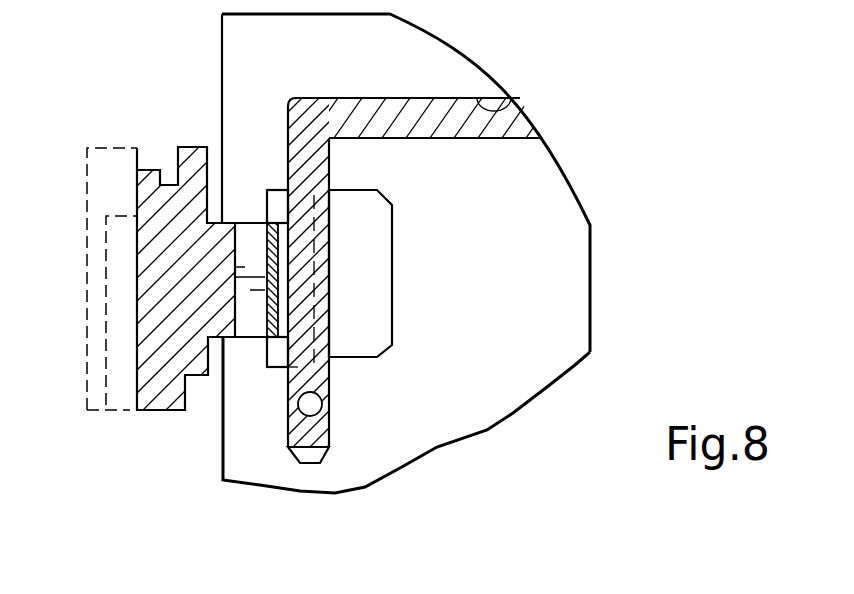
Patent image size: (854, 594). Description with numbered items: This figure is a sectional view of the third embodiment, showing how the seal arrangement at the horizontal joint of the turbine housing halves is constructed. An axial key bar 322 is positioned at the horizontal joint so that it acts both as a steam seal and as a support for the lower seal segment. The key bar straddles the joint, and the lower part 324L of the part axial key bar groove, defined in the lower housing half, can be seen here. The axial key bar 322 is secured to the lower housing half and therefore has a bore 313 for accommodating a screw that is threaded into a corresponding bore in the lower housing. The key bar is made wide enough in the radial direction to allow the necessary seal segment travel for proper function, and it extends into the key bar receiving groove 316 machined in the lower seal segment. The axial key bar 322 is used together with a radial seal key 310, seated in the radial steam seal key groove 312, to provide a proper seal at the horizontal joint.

The radial seal key 310 is at (523, 125).
The radial steam seal key groove 312 is at (522, 98).
The lower part of axial key bar groove 324L is at (290, 127).
The bore 313 is at (322, 405).
The key bar receiving groove 316 is at (285, 338).
The axial key bar 322 is at (310, 378).